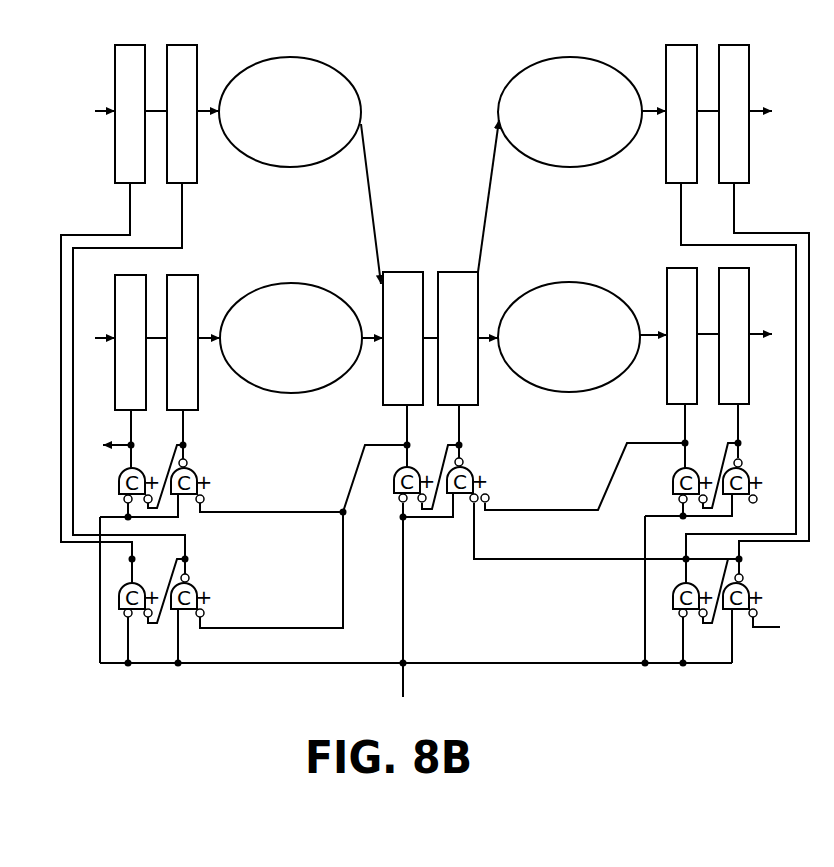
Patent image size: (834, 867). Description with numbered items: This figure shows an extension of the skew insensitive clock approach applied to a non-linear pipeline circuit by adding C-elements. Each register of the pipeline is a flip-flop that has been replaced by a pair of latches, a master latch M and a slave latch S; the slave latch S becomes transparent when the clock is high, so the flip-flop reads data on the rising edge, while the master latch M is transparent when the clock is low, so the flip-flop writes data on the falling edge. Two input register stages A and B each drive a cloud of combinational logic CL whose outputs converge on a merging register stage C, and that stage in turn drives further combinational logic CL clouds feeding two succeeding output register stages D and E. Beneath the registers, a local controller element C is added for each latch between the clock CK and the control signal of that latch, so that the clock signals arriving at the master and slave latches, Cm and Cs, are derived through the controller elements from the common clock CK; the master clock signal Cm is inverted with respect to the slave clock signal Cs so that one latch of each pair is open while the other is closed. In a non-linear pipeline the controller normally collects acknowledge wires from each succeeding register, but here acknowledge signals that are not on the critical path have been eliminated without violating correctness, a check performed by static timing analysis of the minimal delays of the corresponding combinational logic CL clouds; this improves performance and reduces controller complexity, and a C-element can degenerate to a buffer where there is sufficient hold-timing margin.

The flip-flop register stage A is at (156, 99).
The flip-flop register stage B is at (156, 332).
The local controller element (C-element) C is at (430, 325).
The flip-flop register stage D is at (707, 99).
The flip-flop register stage E is at (708, 326).
The master latch M is at (406, 227).
The slave latch S is at (458, 227).
The combinational logic CL is at (430, 225).
The master clock signal Cm is at (404, 424).
The slave clock signal Cs is at (460, 419).
The clock CK is at (424, 615).